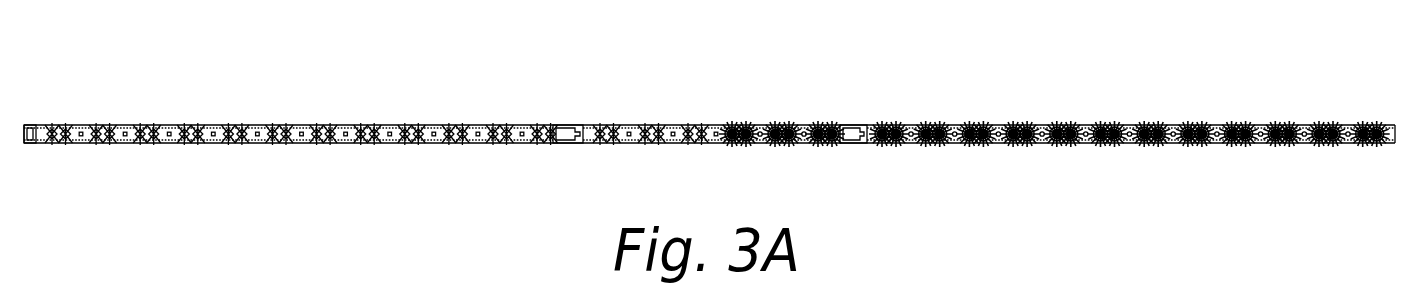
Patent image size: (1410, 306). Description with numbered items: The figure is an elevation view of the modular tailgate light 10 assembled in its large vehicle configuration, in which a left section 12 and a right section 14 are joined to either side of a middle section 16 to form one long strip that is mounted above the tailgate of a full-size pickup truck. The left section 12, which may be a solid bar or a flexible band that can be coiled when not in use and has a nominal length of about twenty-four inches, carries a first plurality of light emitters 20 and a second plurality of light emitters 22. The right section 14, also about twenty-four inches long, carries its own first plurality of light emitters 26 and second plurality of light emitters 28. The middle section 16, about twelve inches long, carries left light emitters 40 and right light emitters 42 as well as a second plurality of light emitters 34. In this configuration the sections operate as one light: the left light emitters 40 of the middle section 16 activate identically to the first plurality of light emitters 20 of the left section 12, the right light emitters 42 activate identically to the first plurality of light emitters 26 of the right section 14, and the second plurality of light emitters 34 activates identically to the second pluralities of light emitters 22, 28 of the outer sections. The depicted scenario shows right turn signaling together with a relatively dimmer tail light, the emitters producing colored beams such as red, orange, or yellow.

The modular tailgate light 10 is at (355, 52).
The left section 12 is at (193, 103).
The right section 14 is at (1222, 100).
The middle section 16 is at (822, 172).
The first plurality of light emitters 20 is at (280, 148).
The second plurality of light emitters 22 is at (392, 148).
The first plurality of light emitters 26 is at (1193, 158).
The second plurality of light emitters 28 is at (1352, 150).
The second plurality of light emitters 34 is at (755, 152).
The left light emitters 40 is at (693, 117).
The right light emitters 42 is at (742, 112).